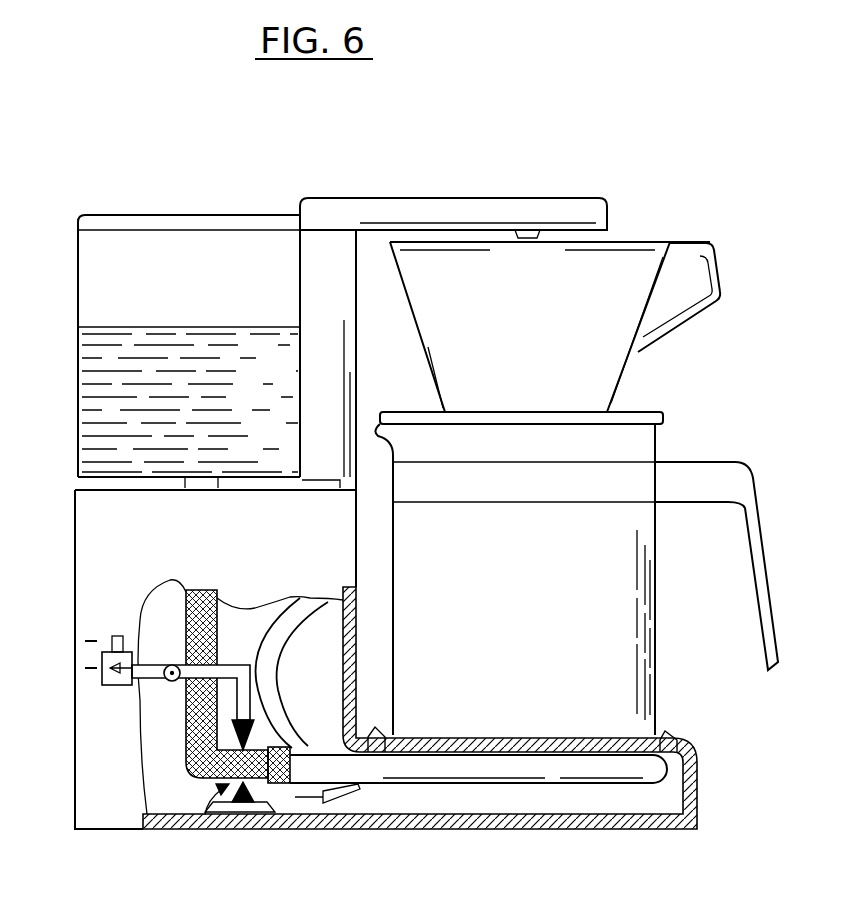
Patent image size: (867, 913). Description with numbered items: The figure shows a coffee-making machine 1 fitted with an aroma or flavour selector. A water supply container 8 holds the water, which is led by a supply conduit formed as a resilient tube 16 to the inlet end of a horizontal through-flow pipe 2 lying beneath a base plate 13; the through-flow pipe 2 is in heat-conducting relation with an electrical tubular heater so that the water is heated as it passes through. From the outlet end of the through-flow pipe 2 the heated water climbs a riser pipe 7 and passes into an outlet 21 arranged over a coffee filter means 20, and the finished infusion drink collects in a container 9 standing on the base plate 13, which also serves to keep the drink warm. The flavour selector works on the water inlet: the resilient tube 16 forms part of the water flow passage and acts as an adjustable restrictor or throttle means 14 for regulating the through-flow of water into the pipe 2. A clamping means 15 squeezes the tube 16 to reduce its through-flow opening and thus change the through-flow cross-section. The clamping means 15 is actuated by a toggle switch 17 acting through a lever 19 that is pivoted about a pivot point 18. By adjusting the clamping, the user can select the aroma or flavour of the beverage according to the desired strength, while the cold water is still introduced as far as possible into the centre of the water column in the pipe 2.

The coffee maker 1 is at (411, 176).
The through-flow pipe 2 is at (523, 765).
The riser pipe 7 is at (273, 693).
The water supply container 8 is at (76, 394).
The container 9 is at (625, 620).
The base plate 13 is at (668, 735).
The restrictor choke or throttle means 14 is at (205, 815).
The clamping means 15 is at (250, 737).
The resilient tube 16 is at (192, 778).
The toggle switch 17 is at (108, 620).
The pivot point 18 is at (170, 664).
The lever 19 is at (198, 672).
The coffee filter means 20 is at (645, 265).
The outlet 21 is at (577, 210).